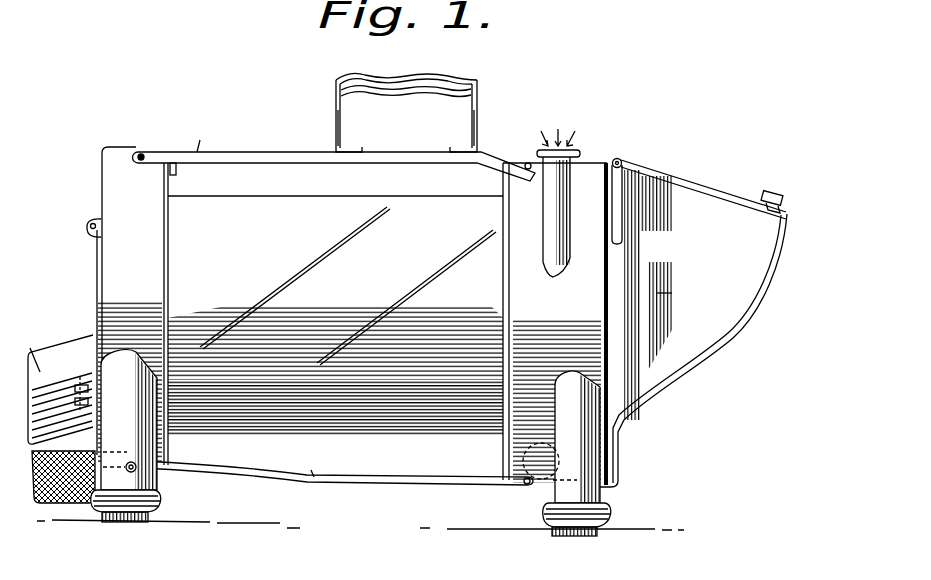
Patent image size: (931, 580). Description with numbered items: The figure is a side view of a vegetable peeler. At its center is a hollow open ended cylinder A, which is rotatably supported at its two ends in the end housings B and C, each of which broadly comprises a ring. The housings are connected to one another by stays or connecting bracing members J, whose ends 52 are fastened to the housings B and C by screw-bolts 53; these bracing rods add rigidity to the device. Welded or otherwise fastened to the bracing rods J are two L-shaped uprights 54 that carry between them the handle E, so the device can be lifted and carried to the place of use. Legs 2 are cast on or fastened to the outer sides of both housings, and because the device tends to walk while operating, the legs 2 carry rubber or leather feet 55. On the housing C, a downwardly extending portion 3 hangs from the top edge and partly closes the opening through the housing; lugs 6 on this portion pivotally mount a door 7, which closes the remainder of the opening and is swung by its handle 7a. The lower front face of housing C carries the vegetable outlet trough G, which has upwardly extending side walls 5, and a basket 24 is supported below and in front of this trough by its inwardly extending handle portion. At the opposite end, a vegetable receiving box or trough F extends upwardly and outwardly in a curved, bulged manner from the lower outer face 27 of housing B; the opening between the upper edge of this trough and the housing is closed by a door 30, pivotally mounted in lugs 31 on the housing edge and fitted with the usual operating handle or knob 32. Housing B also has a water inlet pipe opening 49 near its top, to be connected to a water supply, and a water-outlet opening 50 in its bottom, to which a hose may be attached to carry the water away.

The legs 2 is at (161, 500).
The downwardly extending portion 3 is at (101, 190).
The side walls 5 is at (50, 405).
The lugs 6 is at (87, 222).
The door 7 is at (96, 286).
The handle 7a is at (73, 385).
The basket 24 is at (76, 505).
The lower outer face 27 is at (617, 451).
The door 30 is at (700, 183).
The lugs 31 is at (622, 163).
The operating handle or knob 32 is at (772, 193).
The water inlet pipe opening 49 is at (579, 150).
The water-outlet opening 50 is at (537, 490).
The ends 52 is at (268, 157).
The screw-bolts 53 is at (142, 152).
The L-shaped uprights 54 is at (335, 115).
The rubber or leather feet 55 is at (143, 522).
The hollow open ended cylinder A is at (335, 315).
The end housing B is at (555, 324).
The end housing C is at (138, 272).
The handle E is at (406, 112).
The vegetable receiving box or trough F is at (693, 328).
The vegetable outlet trough G is at (60, 383).
The stays or connecting bracing members J is at (253, 297).